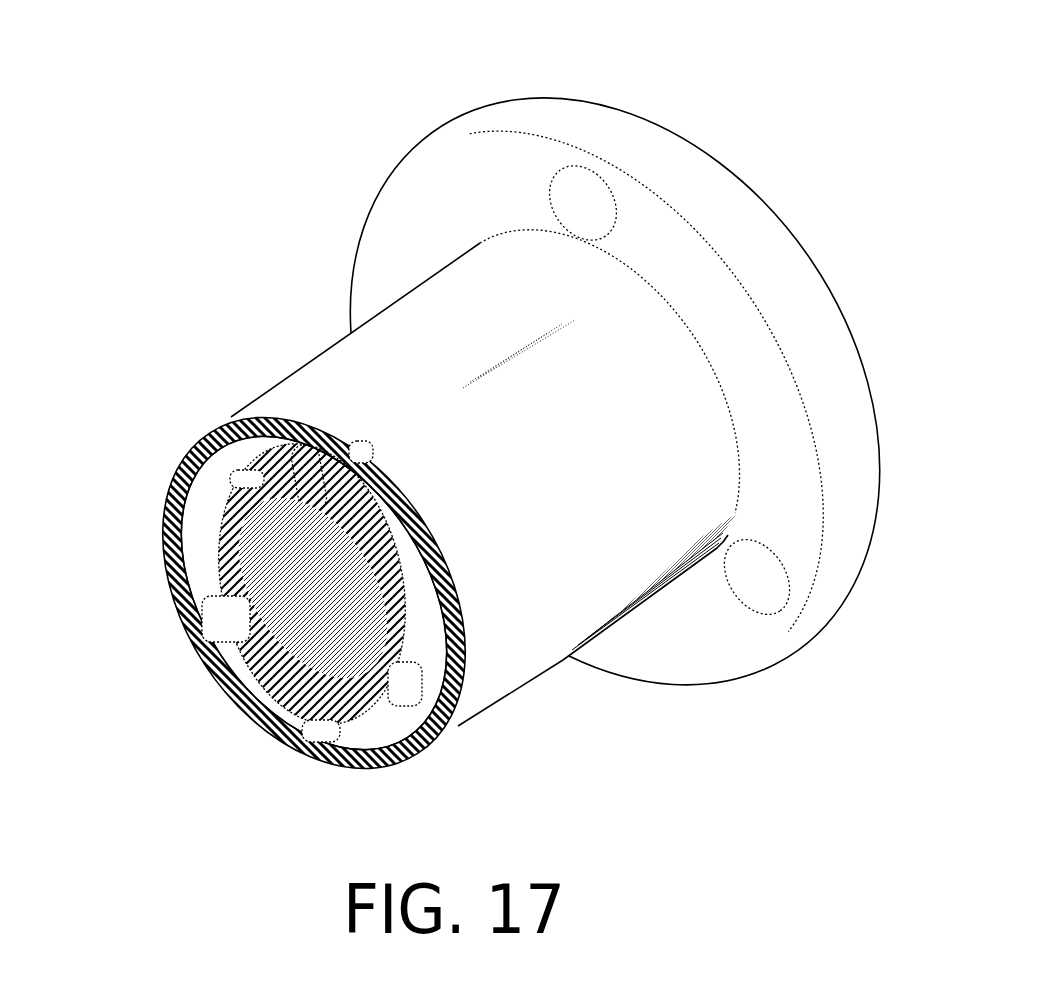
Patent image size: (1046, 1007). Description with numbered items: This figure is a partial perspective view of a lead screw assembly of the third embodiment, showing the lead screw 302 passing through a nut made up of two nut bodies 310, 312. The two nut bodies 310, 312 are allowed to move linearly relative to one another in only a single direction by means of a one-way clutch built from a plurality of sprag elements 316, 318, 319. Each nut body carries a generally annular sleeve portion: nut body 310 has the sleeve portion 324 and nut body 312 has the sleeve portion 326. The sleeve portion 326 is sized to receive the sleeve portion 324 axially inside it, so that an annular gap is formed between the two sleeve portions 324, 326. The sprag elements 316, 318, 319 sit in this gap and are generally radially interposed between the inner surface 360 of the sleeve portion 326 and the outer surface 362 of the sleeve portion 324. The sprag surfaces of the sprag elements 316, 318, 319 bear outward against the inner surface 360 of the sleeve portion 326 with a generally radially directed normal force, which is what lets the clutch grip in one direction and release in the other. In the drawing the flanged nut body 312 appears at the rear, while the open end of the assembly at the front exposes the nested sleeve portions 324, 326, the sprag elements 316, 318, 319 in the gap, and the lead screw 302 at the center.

The lead screw 302 is at (340, 601).
The nut body 310 is at (228, 687).
The nut body 312 is at (447, 196).
The sprag element 316 is at (293, 457).
The sprag element 318 is at (417, 763).
The sprag element 319 is at (213, 613).
The sleeve portion 324 is at (227, 510).
The sleeve portion 326 is at (158, 528).
The inner surface 360 is at (320, 730).
The outer surface 362 is at (362, 455).